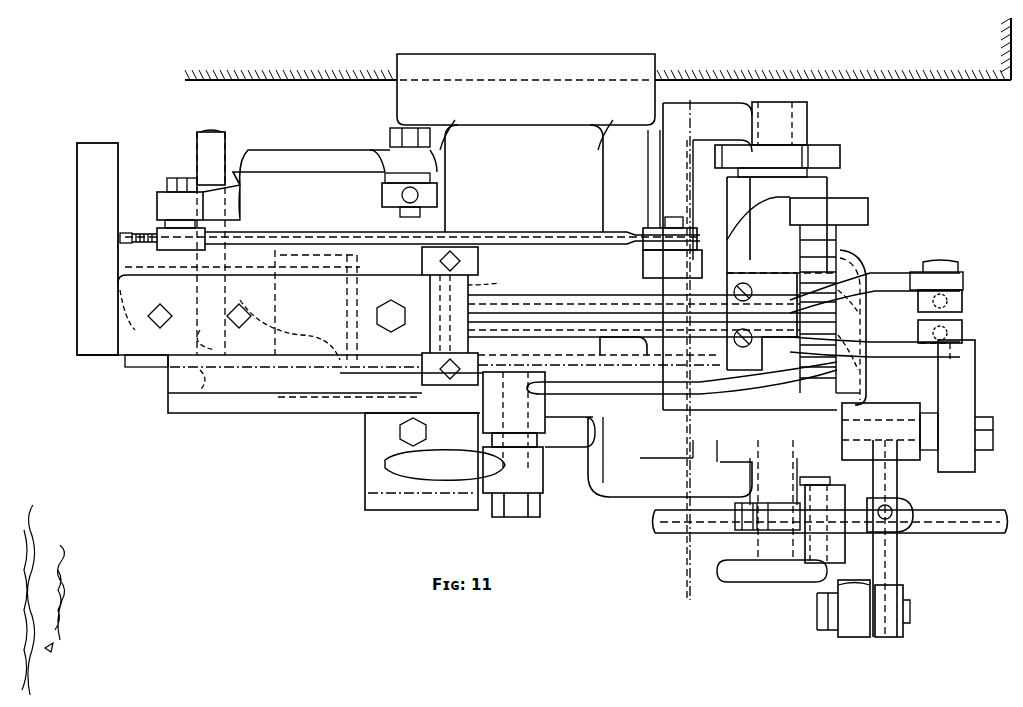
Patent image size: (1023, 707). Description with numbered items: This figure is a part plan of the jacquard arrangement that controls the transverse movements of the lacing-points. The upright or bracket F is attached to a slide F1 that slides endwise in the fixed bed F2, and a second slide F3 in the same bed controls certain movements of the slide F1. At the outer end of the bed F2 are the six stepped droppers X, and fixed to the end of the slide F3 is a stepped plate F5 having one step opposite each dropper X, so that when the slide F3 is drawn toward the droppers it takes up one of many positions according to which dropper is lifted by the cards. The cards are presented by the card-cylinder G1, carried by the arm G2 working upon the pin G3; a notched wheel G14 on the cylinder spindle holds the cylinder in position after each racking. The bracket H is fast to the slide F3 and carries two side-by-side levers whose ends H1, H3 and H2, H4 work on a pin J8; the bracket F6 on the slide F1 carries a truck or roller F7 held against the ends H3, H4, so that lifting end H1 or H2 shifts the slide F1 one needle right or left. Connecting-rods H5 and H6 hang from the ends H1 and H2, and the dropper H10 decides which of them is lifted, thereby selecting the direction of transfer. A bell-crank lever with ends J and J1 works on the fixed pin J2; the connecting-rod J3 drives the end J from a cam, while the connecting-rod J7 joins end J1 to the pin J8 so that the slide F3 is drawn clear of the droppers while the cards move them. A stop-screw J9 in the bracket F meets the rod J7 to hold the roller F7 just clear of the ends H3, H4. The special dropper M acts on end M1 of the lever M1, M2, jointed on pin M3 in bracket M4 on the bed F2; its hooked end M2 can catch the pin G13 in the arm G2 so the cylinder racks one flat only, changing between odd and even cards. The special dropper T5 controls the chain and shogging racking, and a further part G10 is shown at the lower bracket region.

The upright or bracket F is at (97, 249).
The slide F1 is at (249, 249).
The fixed bed F2 is at (324, 384).
The second slide F3 is at (513, 286).
The stepped plate F5 is at (782, 321).
The bracket F6 is at (398, 310).
The truck or roller F7 is at (449, 314).
The bracket H is at (599, 350).
The lever end H1 is at (875, 293).
The lever end H2 is at (875, 349).
The lever end H3 is at (634, 304).
The lever end H4 is at (634, 328).
The connecting-rod H5 is at (962, 300).
The connecting-rod H6 is at (962, 331).
The dropper H10 is at (868, 223).
The special dropper T5 is at (840, 242).
The droppers X is at (852, 327).
The special dropper M is at (853, 385).
The lever end M1 is at (588, 382).
The hooked lever end M2 is at (560, 448).
The pin or axle M3 is at (514, 440).
The bracket M4 is at (435, 461).
The bell-crank lever end J is at (335, 167).
The bell-crank lever end J1 is at (198, 203).
The fixed pin or axle J2 is at (225, 140).
The connecting-rod J3 is at (382, 198).
The connecting-rod J7 is at (513, 232).
The pin J8 is at (668, 216).
The stop-screw J9 is at (143, 246).
The card-cylinder G1 is at (828, 177).
The arm or bracket G2 is at (691, 350).
The pin G3 is at (862, 520).
The lower bracket G10 is at (863, 603).
The pin or axle G13 is at (540, 493).
The notched wheel G14 is at (833, 150).